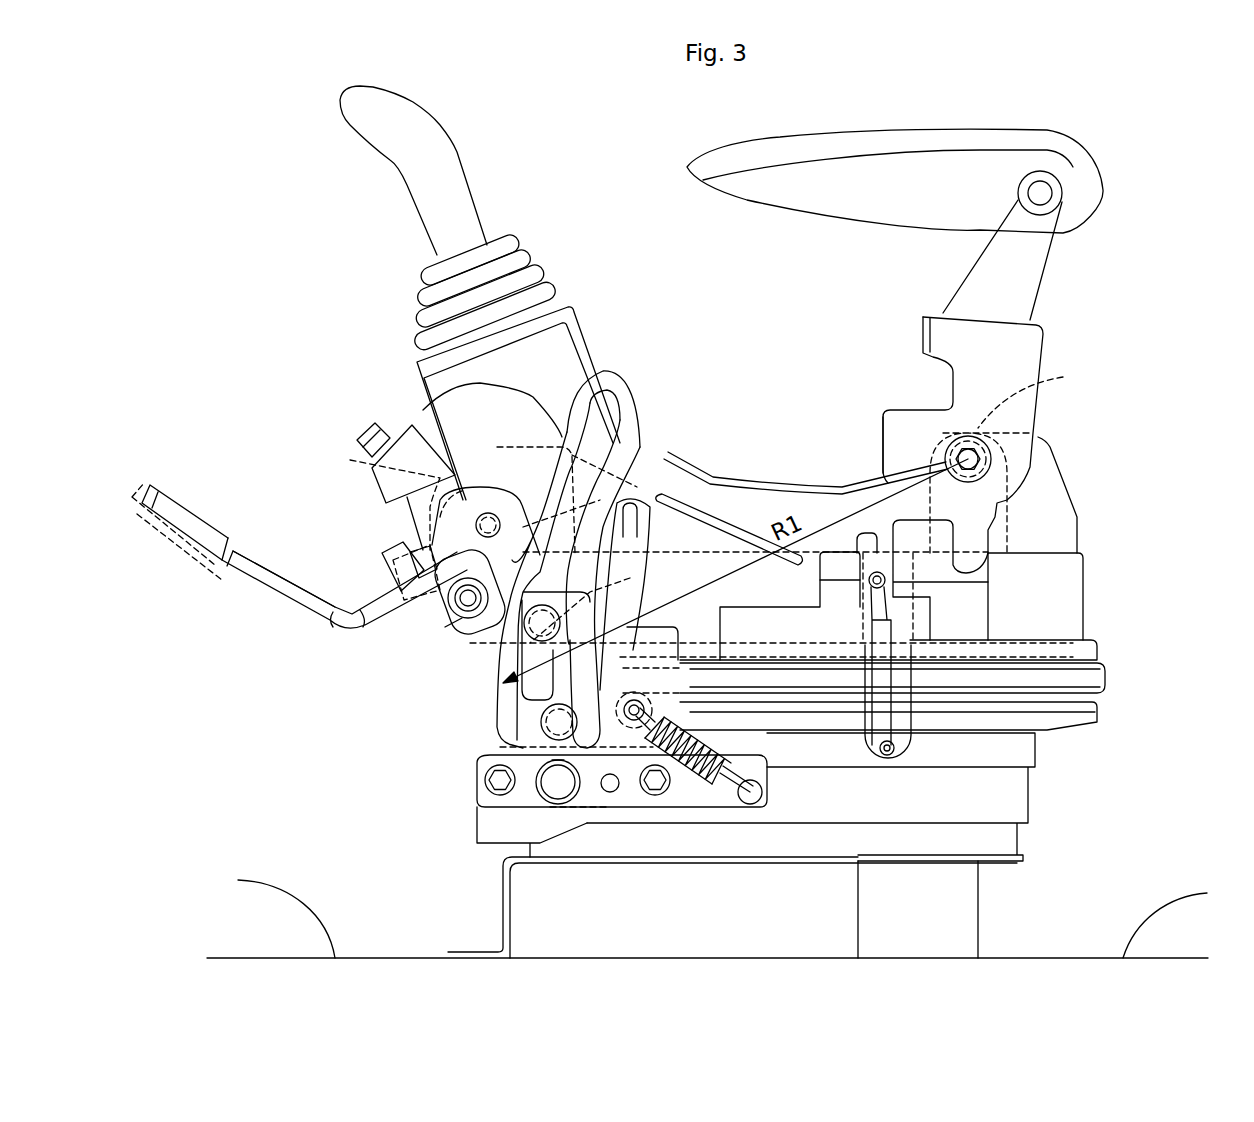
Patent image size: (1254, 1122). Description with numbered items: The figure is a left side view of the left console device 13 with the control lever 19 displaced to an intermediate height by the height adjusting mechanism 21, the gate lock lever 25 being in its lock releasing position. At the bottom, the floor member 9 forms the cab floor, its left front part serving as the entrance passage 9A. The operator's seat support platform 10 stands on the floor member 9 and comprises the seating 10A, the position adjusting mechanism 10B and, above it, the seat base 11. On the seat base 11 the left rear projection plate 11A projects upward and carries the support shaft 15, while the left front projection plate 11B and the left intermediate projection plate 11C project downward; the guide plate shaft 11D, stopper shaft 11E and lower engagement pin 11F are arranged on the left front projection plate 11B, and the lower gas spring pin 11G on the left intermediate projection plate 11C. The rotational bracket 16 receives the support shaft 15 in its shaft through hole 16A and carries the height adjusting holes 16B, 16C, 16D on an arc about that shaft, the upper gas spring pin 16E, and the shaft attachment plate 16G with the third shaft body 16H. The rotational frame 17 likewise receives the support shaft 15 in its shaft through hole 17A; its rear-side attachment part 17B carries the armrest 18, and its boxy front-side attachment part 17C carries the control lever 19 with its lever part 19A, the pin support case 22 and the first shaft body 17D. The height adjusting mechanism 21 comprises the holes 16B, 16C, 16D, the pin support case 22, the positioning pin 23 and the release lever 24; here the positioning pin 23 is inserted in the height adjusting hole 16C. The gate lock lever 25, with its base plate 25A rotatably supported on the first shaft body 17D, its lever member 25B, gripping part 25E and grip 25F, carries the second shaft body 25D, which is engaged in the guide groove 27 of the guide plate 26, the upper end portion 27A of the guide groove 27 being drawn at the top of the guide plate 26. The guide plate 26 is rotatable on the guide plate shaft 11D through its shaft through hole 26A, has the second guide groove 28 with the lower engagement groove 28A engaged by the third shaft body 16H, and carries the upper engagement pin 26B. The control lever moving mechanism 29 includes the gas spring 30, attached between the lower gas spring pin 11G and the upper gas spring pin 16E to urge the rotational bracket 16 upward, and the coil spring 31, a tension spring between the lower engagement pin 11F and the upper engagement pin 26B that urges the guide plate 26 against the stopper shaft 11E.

The floor member 9 is at (717, 917).
The entrance passage 9A is at (271, 912).
The operator's seat support platform 10 is at (1036, 794).
The seating 10A is at (947, 893).
The position adjusting mechanism 10B is at (1073, 681).
The seat base 11 is at (1037, 575).
The left rear projection plate 11A is at (1043, 515).
The left front projection plate 11B is at (685, 792).
The left intermediate projection plate 11C is at (903, 712).
The guide plate shaft 11D is at (548, 783).
The stopper shaft 11E is at (612, 792).
The lower engagement pin 11F is at (757, 804).
The lower gas spring pin 11G is at (890, 757).
The left console device 13 is at (618, 198).
The support shaft 15 is at (1039, 395).
The rotational bracket 16 is at (997, 603).
The shaft through hole 16A is at (990, 460).
The height adjusting hole 16B is at (432, 541).
The height adjusting hole 16C is at (458, 607).
The height adjusting hole 16D is at (520, 633).
The upper gas spring pin 16E is at (818, 578).
The shaft attachment plate 16G is at (587, 673).
The third shaft body 16H is at (540, 735).
The rotational frame 17 is at (1055, 344).
The shaft through hole 17A is at (968, 459).
The rear-side attachment part 17B is at (915, 430).
The front-side attachment part 17C is at (537, 368).
The first shaft body 17D is at (387, 465).
The armrest 18 is at (848, 187).
The control lever 19 is at (398, 299).
The lever part 19A is at (445, 170).
The height adjusting mechanism 21 is at (370, 553).
The pin support case 22 is at (420, 517).
The positioning pin 23 is at (440, 640).
The release lever 24 is at (398, 567).
The gate lock lever 25 is at (294, 628).
The base plate 25A is at (484, 512).
The lever member 25B is at (247, 572).
The second shaft body 25D is at (630, 580).
The gripping part 25E is at (200, 538).
The grip 25F is at (150, 480).
The guide plate 26 is at (640, 435).
The shaft through hole 26A is at (562, 798).
The upper engagement pin 26B is at (653, 795).
The guide groove 27 is at (560, 470).
The crank loop 27A is at (613, 395).
The second guide groove 28 is at (665, 480).
The lower engagement groove 28A is at (485, 785).
The control lever moving mechanism 29 is at (902, 683).
The gas spring 30 is at (883, 630).
The coil spring 31 is at (707, 790).